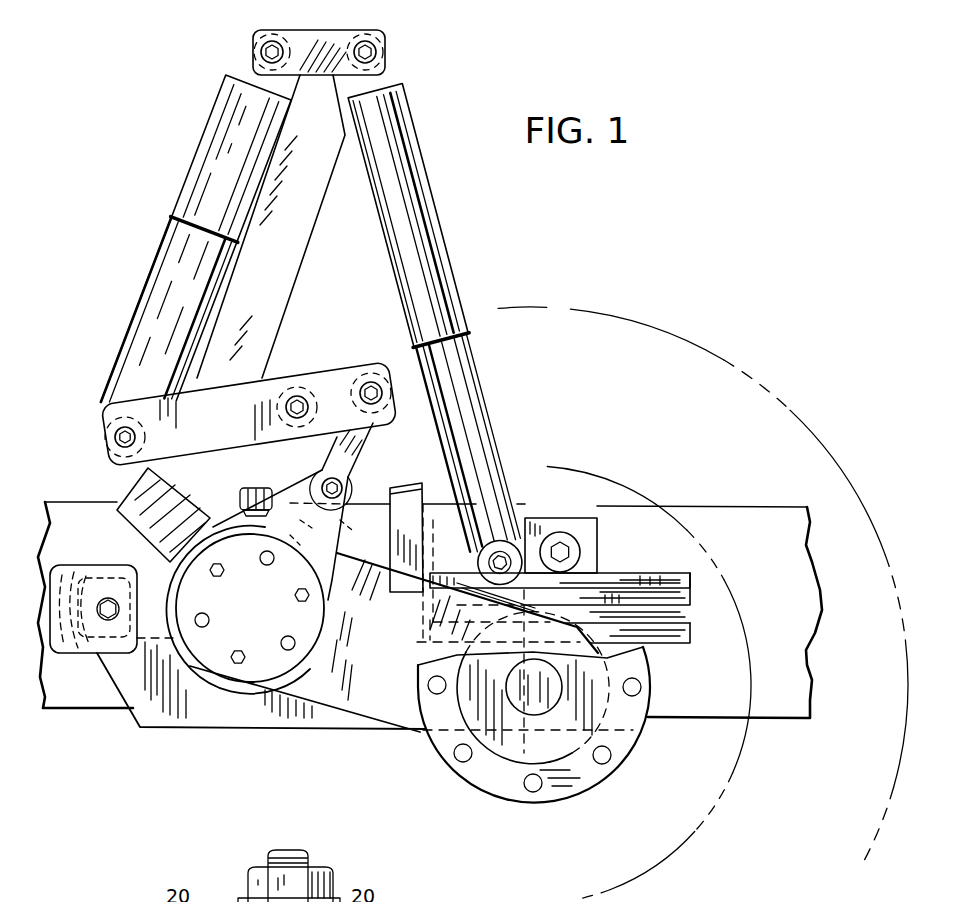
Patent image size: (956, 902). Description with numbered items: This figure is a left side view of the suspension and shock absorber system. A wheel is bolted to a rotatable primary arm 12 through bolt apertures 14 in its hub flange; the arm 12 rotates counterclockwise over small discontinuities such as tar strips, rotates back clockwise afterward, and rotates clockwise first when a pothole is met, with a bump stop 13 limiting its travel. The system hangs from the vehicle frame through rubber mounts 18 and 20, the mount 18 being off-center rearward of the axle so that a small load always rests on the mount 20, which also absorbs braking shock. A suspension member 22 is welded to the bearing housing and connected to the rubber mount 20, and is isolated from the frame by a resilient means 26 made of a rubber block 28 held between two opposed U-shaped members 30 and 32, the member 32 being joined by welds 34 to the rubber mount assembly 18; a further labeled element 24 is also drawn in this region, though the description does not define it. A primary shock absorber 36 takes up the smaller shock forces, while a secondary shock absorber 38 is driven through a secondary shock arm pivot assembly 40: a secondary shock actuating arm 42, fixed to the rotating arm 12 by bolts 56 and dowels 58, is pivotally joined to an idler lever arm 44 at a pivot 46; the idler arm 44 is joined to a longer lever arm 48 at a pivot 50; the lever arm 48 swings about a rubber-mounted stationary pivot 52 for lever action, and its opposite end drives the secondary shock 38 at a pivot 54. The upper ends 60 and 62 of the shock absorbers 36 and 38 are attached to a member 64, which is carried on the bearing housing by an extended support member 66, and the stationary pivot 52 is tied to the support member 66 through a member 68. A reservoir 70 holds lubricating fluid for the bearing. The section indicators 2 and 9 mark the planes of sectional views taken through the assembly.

The section line 2- 2 is at (378, 762).
The section line 9- 9 is at (563, 522).
The primary arm 12 is at (350, 727).
The bump stop 13 is at (404, 492).
The bolt apertures 14 is at (609, 754).
The rubber mount 18 is at (566, 532).
The rubber mount 20 is at (98, 580).
The suspension member 22 is at (137, 708).
The disc 24 is at (213, 682).
The resilient means 26 is at (711, 614).
The rubber block 28 is at (690, 624).
The U-shaped member 30 is at (682, 645).
The U-shaped member 32 is at (697, 585).
The welds 34 is at (594, 561).
The primary shock absorber 36 is at (452, 378).
The secondary shock absorber 38 is at (180, 275).
The secondary shock arm pivot assembly 40 is at (97, 447).
The secondary shock actuating arm 42 is at (322, 542).
The idler lever arm 44 is at (342, 444).
The pivot 46 is at (327, 508).
The lever arm 48 is at (346, 374).
The pivot 50 is at (362, 394).
The stationary pivot 52 is at (286, 408).
The pivot 54 is at (118, 433).
The bolts 56 is at (295, 593).
The dowels 58 is at (282, 642).
The upper end 60 is at (378, 52).
The upper end 62 is at (266, 51).
The member 64 is at (327, 32).
The extended support member 66 is at (324, 195).
The member 68 is at (289, 365).
The reservoir 70 is at (256, 494).